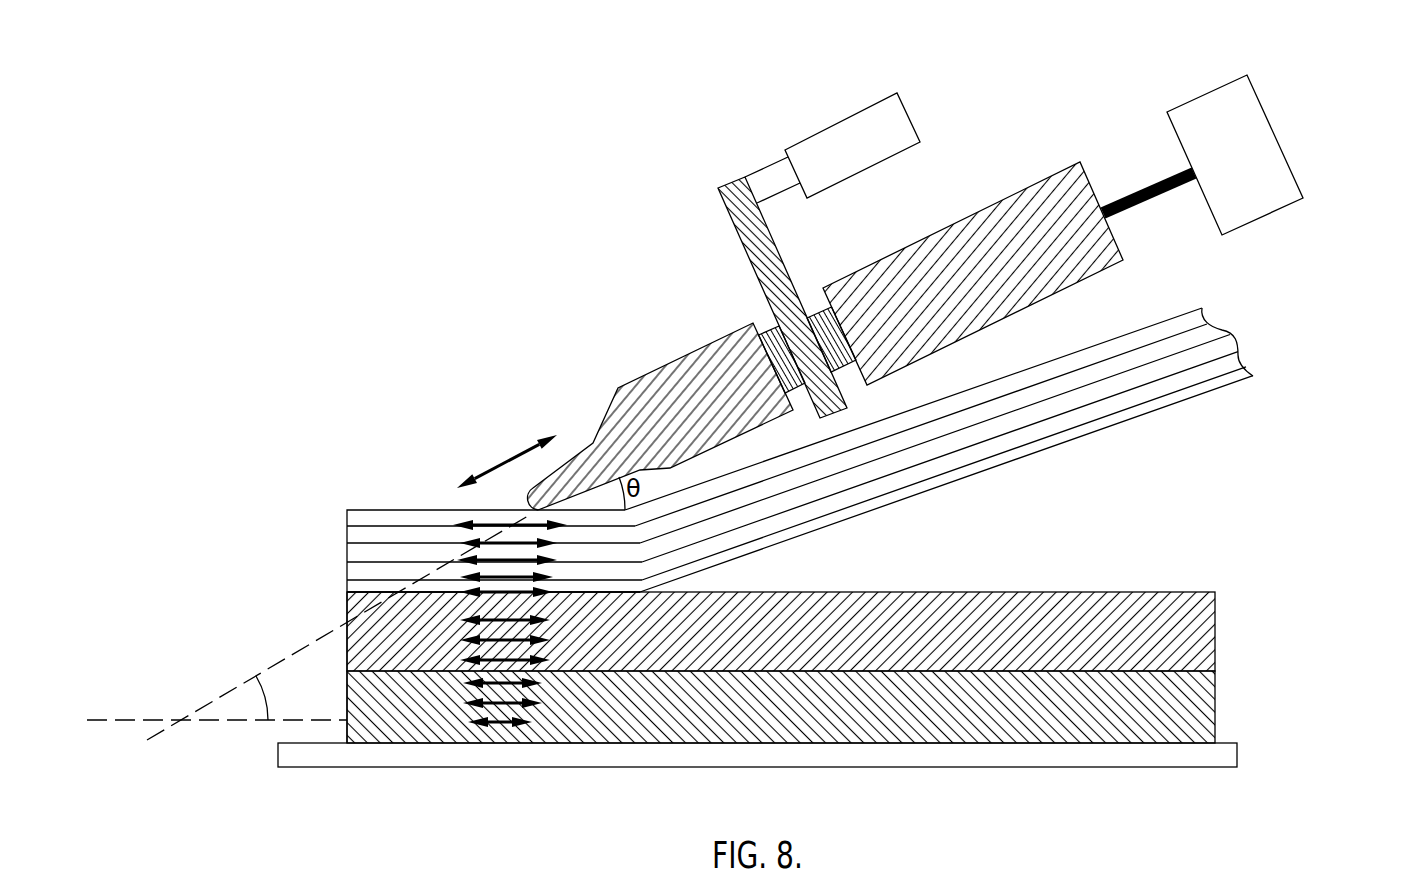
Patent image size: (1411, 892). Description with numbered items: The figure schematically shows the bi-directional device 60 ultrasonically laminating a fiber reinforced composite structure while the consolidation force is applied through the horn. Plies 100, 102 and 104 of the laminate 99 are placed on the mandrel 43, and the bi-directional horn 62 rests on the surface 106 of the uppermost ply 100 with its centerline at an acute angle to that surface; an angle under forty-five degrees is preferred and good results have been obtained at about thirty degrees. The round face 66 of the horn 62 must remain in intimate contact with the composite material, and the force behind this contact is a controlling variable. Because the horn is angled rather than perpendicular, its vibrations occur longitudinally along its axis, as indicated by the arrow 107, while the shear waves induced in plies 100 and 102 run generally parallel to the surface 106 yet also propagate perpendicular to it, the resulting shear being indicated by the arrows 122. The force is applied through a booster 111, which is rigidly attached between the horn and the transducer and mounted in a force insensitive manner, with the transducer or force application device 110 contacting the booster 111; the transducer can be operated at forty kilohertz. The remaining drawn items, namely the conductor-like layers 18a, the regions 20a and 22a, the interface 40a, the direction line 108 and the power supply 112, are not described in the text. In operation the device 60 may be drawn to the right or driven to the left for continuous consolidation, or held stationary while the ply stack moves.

The conductive traces of flexible circuit 18a is at (1105, 378).
The lower adhesive/bond layer region 20a is at (1042, 718).
The upper adhesive/bond layer region 22a is at (1055, 618).
The bond interface 40a is at (427, 593).
The mandrel 43 is at (1237, 765).
The bi-directional device 60 is at (890, 258).
The bi-directional horn 62 is at (589, 374).
The round face 66 is at (530, 497).
The laminate 99 is at (303, 572).
The uppermost ply 100 is at (803, 498).
The ply 102 is at (1213, 647).
The ply 104 is at (1215, 717).
The surface 106 is at (363, 510).
The arrow 107 is at (498, 467).
The beam axis / incident direction 108 is at (293, 653).
The transducer 110 is at (855, 125).
The booster 111 is at (770, 333).
The power supply 112 is at (1275, 158).
The arrows 122 is at (523, 660).